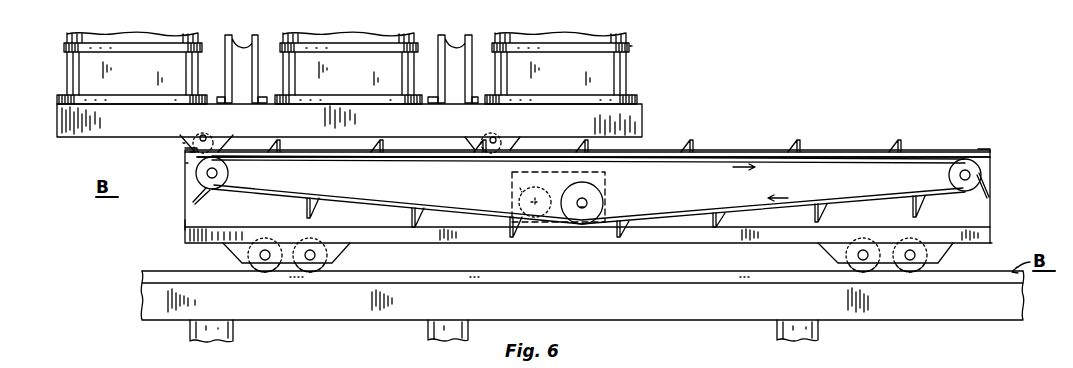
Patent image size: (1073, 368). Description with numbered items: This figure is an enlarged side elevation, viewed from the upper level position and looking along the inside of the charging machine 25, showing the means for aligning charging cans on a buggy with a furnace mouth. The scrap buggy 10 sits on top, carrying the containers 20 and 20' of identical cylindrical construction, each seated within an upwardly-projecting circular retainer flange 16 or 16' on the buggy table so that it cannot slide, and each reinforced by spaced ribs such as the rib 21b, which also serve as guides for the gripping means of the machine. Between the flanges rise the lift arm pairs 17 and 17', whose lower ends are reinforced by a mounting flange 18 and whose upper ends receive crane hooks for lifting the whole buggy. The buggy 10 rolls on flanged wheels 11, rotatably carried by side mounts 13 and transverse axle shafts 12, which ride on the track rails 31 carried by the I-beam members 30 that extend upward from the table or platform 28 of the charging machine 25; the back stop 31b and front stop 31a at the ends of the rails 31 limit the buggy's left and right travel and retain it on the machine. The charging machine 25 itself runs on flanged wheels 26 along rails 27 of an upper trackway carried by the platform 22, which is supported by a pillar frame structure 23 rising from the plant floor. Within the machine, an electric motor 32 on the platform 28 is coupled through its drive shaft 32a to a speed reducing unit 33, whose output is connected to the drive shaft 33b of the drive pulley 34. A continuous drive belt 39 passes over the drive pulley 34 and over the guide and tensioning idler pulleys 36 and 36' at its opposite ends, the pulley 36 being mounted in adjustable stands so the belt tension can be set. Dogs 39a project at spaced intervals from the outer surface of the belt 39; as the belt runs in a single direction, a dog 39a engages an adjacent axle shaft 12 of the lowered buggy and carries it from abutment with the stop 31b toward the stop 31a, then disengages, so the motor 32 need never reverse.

The scrap buggy 10 is at (653, 127).
The flanged wheels 11 is at (188, 163).
The transverse axle shafts 12 is at (212, 138).
The side mounts 13 is at (185, 143).
The retainer flange 16 is at (581, 87).
The retainer flange 16' is at (348, 111).
The lift arm pair 17 is at (455, 53).
The lift arm pair 17' is at (241, 52).
The mounting flange 18 is at (260, 104).
The container 20 is at (560, 51).
The container 20' is at (349, 49).
The flange or rib 21b is at (626, 52).
The platform 22 is at (142, 307).
The pillar frame structure 23 is at (234, 333).
The charging machine 25 is at (995, 246).
The flanged wheels 26 is at (350, 245).
The rails 27 is at (155, 271).
The table or platform 28 is at (186, 227).
The I-beam member 30 is at (975, 210).
The track rails 31 is at (855, 140).
The front stop 31a is at (983, 148).
The back stop 31b is at (185, 153).
The electric motor 32 is at (516, 187).
The drive shaft 32a is at (519, 193).
The speed reducing unit 33 is at (605, 172).
The drive shaft 33b is at (583, 208).
The drive pulley 34 is at (604, 203).
The idler pulley 36 is at (948, 175).
The idler pulley 36' is at (235, 173).
The continuous drive belt 39 is at (835, 185).
The dogs 39a is at (694, 144).